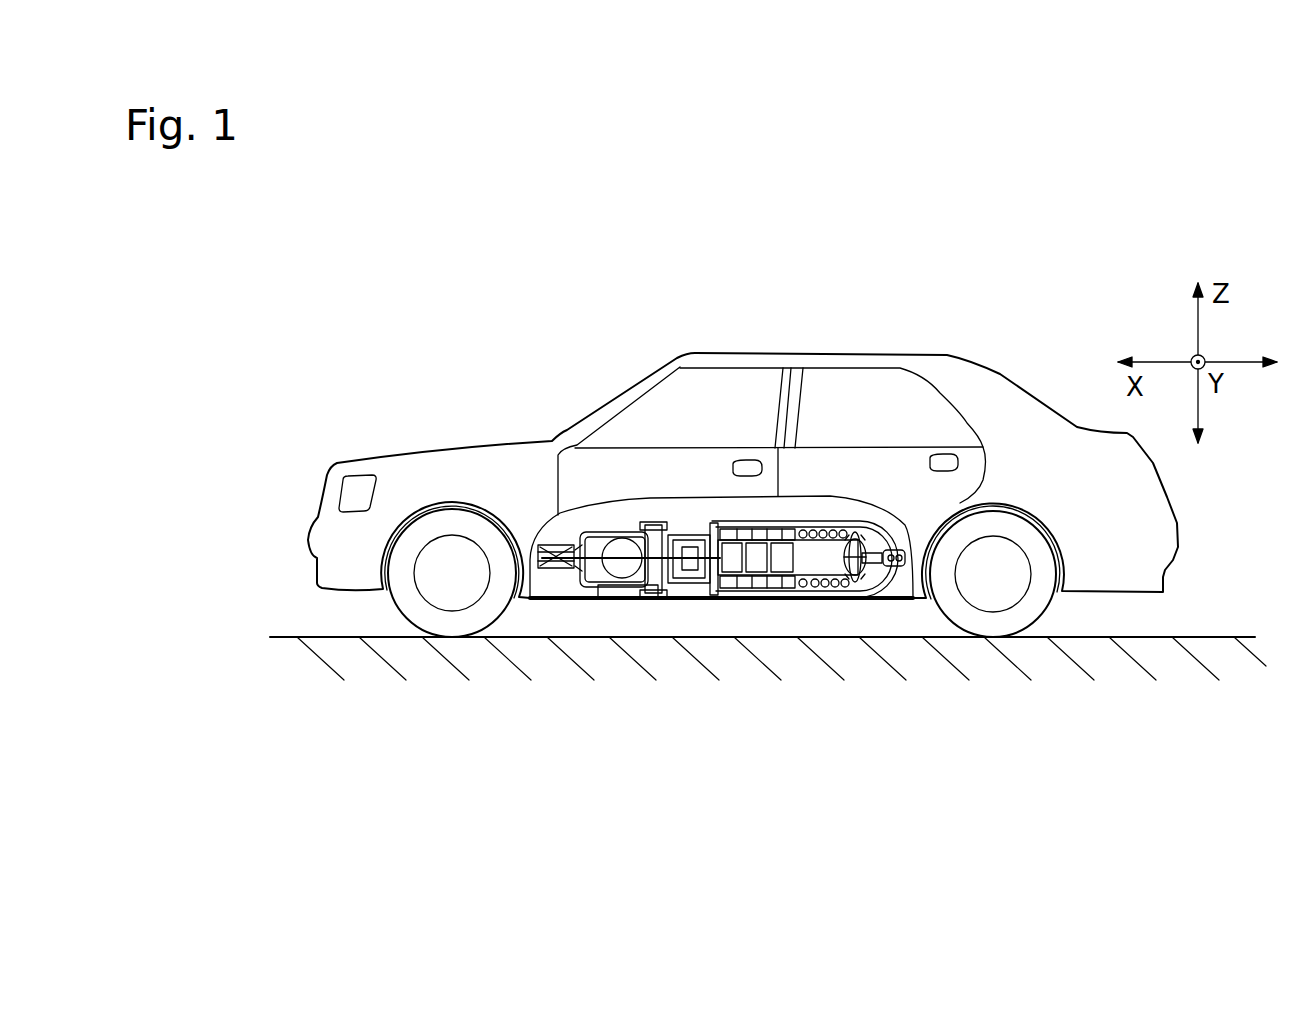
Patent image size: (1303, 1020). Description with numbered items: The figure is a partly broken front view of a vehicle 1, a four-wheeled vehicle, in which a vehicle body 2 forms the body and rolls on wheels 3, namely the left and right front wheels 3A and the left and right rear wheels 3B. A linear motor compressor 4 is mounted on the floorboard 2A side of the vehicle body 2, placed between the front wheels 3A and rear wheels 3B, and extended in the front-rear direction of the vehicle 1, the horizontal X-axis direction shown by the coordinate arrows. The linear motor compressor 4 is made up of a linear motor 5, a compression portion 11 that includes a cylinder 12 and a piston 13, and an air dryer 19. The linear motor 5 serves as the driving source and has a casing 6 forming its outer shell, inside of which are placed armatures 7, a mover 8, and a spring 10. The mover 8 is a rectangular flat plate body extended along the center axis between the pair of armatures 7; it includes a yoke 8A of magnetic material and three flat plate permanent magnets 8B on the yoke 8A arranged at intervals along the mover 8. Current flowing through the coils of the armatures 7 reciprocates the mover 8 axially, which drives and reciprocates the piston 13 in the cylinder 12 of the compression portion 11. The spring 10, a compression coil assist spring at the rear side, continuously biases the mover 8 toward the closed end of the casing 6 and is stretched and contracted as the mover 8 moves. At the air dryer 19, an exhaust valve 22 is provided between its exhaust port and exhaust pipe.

The vehicle 1 is at (686, 326).
The vehicle body 2 is at (998, 378).
The floorboard 2A is at (598, 597).
The wheels 3 is at (396, 623).
The front wheels 3A is at (447, 622).
The rear wheels 3B is at (990, 632).
The linear motor compressor 4 is at (630, 515).
The linear motor 5 is at (822, 508).
The casing 6 is at (886, 598).
The armatures 7 is at (742, 598).
The mover 8 is at (715, 598).
The yoke 8A is at (808, 566).
The permanent magnets 8B is at (782, 562).
The spring 10 is at (842, 575).
The compression portion 11 is at (687, 594).
The cylinder 12 is at (674, 592).
The piston 13 is at (690, 540).
The air dryer 19 is at (621, 598).
The exhaust valve 22 is at (546, 580).